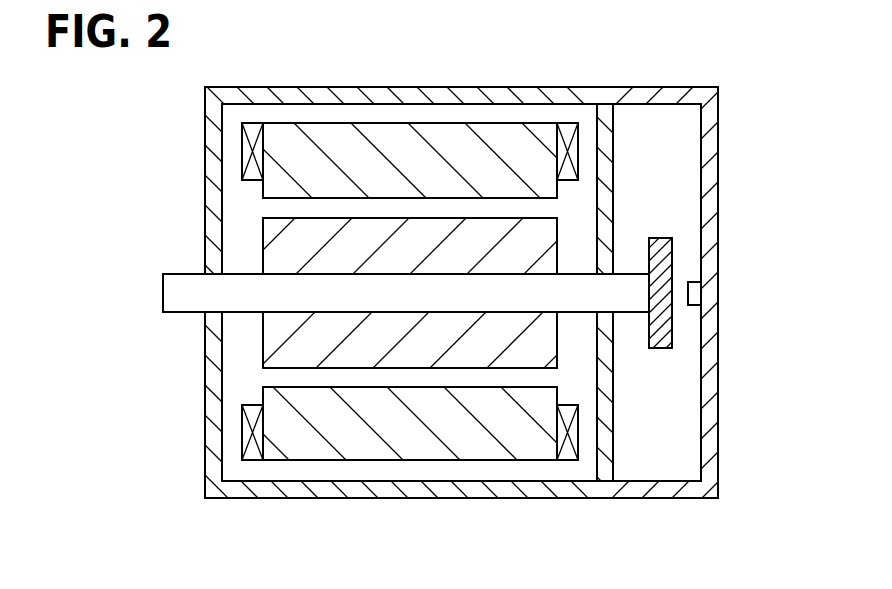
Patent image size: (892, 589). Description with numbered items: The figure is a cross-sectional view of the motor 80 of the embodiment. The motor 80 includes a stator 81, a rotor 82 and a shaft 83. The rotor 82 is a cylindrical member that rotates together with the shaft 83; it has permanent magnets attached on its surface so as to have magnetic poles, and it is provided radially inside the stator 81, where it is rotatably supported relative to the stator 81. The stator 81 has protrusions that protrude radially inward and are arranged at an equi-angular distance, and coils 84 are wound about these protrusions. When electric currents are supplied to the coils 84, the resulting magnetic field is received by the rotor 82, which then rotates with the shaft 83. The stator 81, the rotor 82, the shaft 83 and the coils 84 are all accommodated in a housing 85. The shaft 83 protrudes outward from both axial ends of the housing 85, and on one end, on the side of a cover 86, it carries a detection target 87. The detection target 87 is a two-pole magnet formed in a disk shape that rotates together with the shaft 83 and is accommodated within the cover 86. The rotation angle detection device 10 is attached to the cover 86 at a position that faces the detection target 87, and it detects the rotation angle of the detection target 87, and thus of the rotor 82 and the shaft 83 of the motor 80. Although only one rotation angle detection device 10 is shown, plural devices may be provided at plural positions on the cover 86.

The rotation angle detection device 10 is at (692, 302).
The motor 80 is at (250, 500).
The stator 81 is at (338, 132).
The rotor 82 is at (288, 352).
The shaft 83 is at (180, 293).
The coils 84 is at (248, 132).
The housing 85 is at (567, 494).
The cover 86 is at (678, 494).
The detection target 87 is at (665, 247).